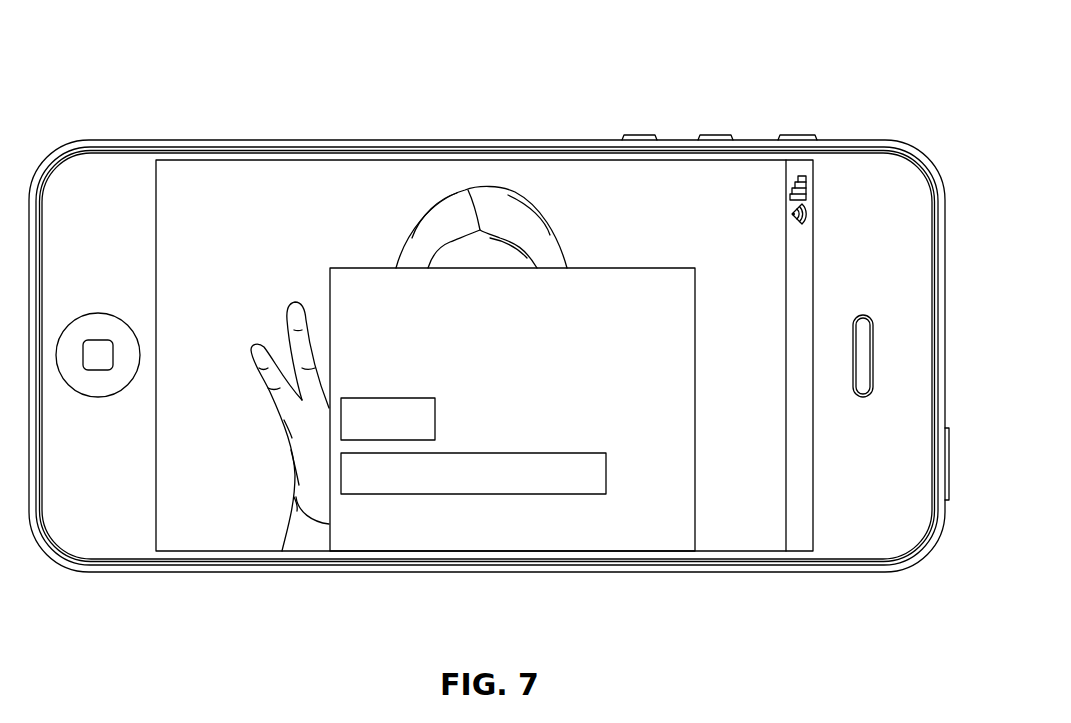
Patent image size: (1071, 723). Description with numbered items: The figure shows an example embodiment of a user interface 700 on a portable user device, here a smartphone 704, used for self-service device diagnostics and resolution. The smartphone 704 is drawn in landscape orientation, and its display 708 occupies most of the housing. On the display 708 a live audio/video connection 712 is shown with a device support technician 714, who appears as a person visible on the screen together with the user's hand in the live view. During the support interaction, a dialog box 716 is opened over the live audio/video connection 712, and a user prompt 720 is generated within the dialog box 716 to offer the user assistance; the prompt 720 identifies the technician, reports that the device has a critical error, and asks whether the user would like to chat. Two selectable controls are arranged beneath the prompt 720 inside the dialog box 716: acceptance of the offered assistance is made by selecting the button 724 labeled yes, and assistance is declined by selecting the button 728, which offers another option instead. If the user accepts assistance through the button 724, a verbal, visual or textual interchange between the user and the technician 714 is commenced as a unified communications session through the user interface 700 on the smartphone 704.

The user interface 700 is at (749, 102).
The smartphone 704 is at (748, 572).
The display 708 is at (232, 178).
The live audio/video connection 712 is at (257, 509).
The device support technician 714 is at (458, 252).
The dialog box 716 is at (607, 277).
The user prompt 720 is at (615, 328).
The button 724 is at (435, 417).
The button 728 is at (548, 494).